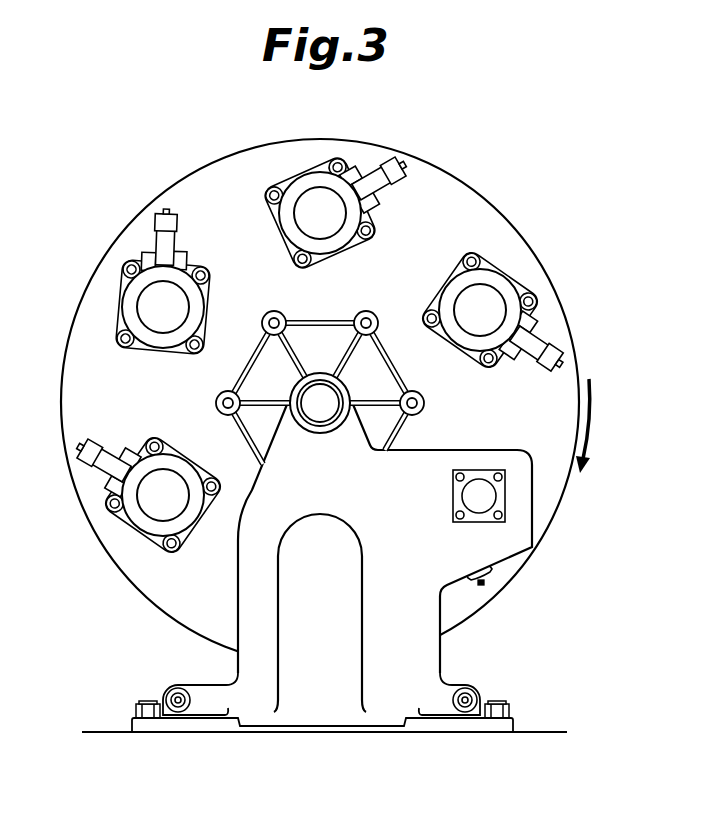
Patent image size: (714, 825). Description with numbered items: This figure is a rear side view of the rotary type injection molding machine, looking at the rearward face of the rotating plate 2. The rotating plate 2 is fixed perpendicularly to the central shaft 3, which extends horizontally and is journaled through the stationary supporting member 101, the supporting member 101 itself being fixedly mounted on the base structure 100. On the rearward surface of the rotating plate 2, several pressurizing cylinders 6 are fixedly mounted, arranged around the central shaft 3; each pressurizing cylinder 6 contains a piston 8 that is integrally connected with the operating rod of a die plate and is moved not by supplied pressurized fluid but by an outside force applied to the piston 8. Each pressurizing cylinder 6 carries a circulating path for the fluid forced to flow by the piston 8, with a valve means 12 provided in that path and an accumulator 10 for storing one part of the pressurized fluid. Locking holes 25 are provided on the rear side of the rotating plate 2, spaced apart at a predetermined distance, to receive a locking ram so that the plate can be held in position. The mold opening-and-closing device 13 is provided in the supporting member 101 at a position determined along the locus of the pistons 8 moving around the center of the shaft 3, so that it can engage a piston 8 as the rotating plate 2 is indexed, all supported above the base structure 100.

The rotating plate 2 is at (190, 186).
The central shaft 3 is at (320, 392).
The pressurizing cylinder 6 is at (315, 186).
The piston 8 is at (305, 200).
The accumulator 10 is at (386, 178).
The valve means 12 is at (362, 180).
The mold opening-and-closing device 13 is at (490, 497).
The locking holes 25 is at (362, 316).
The base structure 100 is at (122, 746).
The stationary supporting member 101 is at (355, 501).